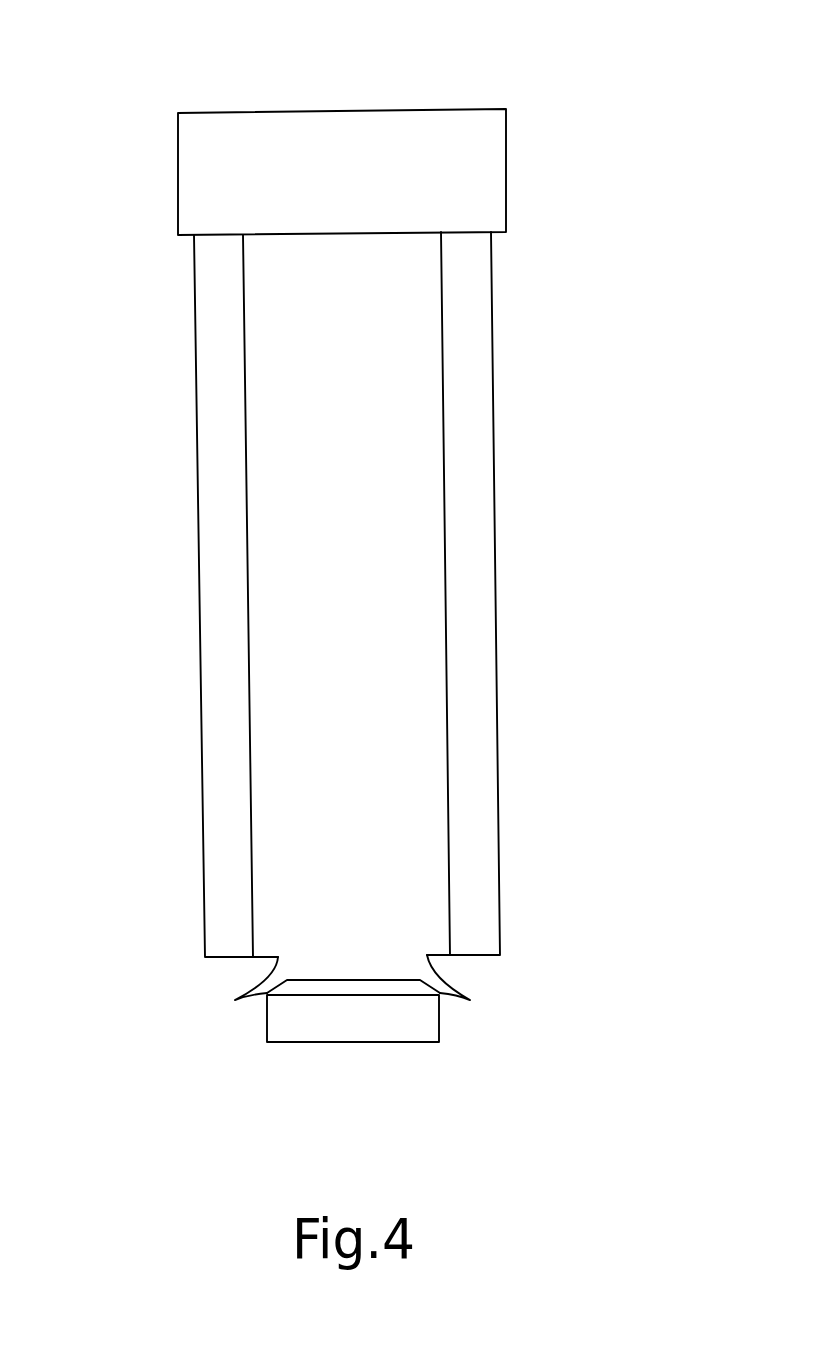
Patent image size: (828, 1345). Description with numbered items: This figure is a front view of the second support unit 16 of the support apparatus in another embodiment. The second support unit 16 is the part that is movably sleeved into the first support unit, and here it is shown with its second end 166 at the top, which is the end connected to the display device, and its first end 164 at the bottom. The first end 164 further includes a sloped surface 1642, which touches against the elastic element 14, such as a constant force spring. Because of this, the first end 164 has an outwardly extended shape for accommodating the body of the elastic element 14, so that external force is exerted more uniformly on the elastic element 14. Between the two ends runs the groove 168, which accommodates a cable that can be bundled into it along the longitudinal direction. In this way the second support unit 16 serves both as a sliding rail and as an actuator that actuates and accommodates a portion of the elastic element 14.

The second support unit 16 is at (624, 116).
The second end 166 is at (364, 150).
The groove 168 is at (222, 588).
The first end 164 is at (256, 983).
The sloped surface 1642 is at (436, 982).
The elastic element 14 is at (410, 1012).